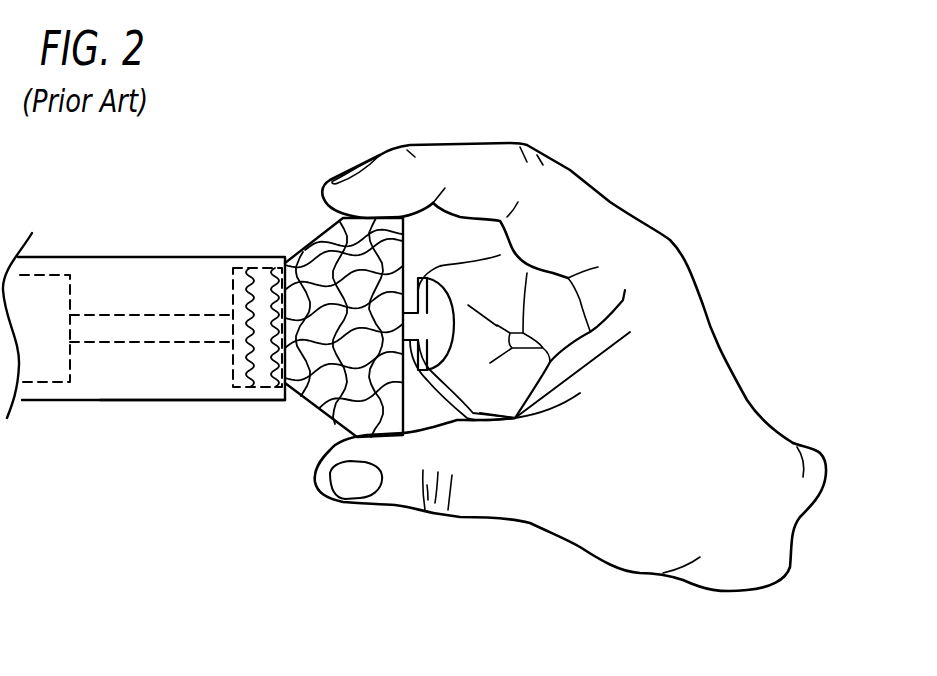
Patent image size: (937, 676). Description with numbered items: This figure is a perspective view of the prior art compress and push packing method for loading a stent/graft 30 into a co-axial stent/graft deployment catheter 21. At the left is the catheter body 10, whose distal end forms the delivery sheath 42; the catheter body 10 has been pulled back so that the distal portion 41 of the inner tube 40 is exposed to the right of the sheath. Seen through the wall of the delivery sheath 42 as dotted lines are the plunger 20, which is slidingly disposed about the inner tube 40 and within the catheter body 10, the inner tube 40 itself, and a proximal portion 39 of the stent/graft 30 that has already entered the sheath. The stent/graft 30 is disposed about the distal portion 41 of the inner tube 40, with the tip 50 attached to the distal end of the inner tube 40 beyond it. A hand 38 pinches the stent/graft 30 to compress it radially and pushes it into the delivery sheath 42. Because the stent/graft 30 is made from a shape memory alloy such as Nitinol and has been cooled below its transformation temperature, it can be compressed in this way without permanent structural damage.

The catheter body 10 is at (115, 257).
The plunger 20 is at (59, 275).
The stent/graft deployment catheter 21 is at (99, 414).
The stent/graft 30 is at (403, 240).
The hand 38 is at (570, 170).
The proximal portion of the stent/graft 39 is at (267, 268).
The inner tube 40 is at (168, 315).
The distal portion of the inner tube 41 is at (410, 312).
The delivery sheath 42 is at (203, 400).
The tip 50 is at (453, 330).